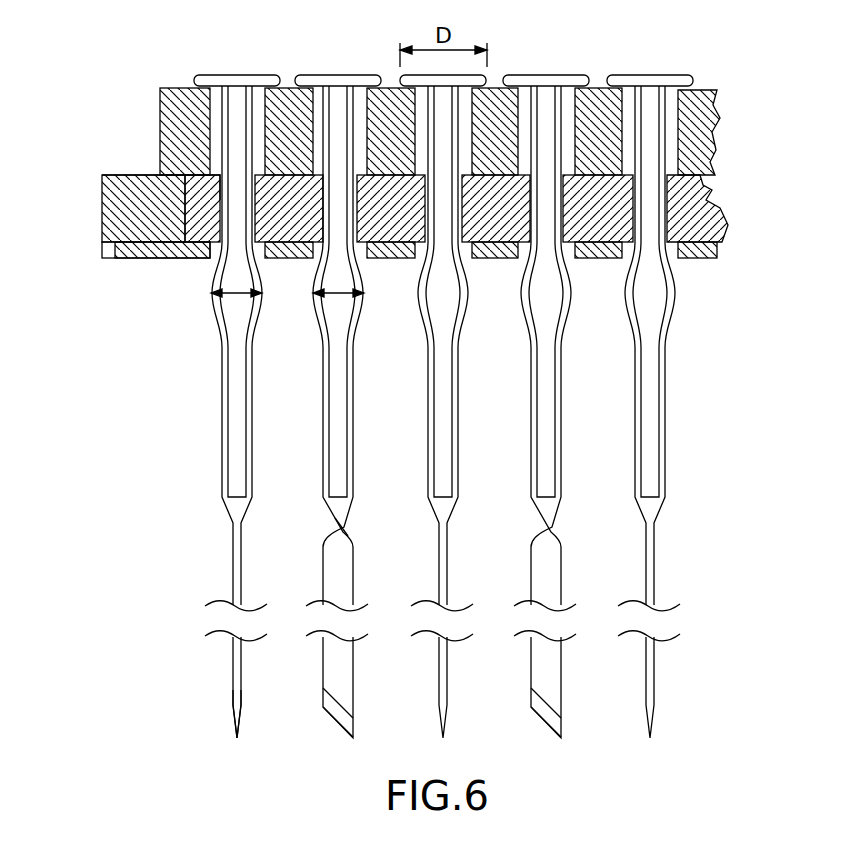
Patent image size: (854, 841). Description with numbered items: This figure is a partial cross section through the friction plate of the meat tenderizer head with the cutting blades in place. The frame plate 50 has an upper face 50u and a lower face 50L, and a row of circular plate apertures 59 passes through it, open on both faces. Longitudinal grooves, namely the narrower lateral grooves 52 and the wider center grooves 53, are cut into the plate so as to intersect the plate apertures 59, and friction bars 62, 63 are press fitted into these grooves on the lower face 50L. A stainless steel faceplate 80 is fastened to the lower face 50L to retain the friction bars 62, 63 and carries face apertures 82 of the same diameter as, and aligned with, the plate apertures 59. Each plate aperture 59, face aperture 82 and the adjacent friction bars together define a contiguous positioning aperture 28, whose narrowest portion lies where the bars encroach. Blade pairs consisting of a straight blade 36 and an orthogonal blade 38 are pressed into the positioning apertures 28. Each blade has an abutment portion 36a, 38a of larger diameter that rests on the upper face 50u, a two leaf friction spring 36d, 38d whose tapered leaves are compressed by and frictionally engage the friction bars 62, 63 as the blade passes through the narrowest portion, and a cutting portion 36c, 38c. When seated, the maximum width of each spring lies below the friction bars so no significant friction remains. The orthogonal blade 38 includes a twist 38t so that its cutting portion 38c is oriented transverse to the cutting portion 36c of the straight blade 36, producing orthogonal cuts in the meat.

The positioning aperture 28 is at (207, 124).
The straight blade 36 is at (230, 378).
The abutment portion 36a is at (240, 78).
The cutting portion 36c is at (232, 718).
The friction spring 36d is at (245, 367).
The orthogonal blade 38 is at (339, 380).
The abutment portion 38a is at (338, 78).
The cutting portion 38c is at (335, 712).
The friction spring 38d is at (352, 375).
The twist 38t is at (346, 521).
The frame plate 50 is at (112, 210).
The upper face 50u is at (192, 88).
The lower face 50L is at (112, 260).
The lateral groove 52 is at (190, 182).
The center groove 53 is at (702, 197).
The plate aperture 59 is at (672, 130).
The friction bar 62 is at (193, 235).
The friction bar 63 is at (597, 230).
The faceplate 80 is at (140, 253).
The face aperture 82 is at (677, 260).